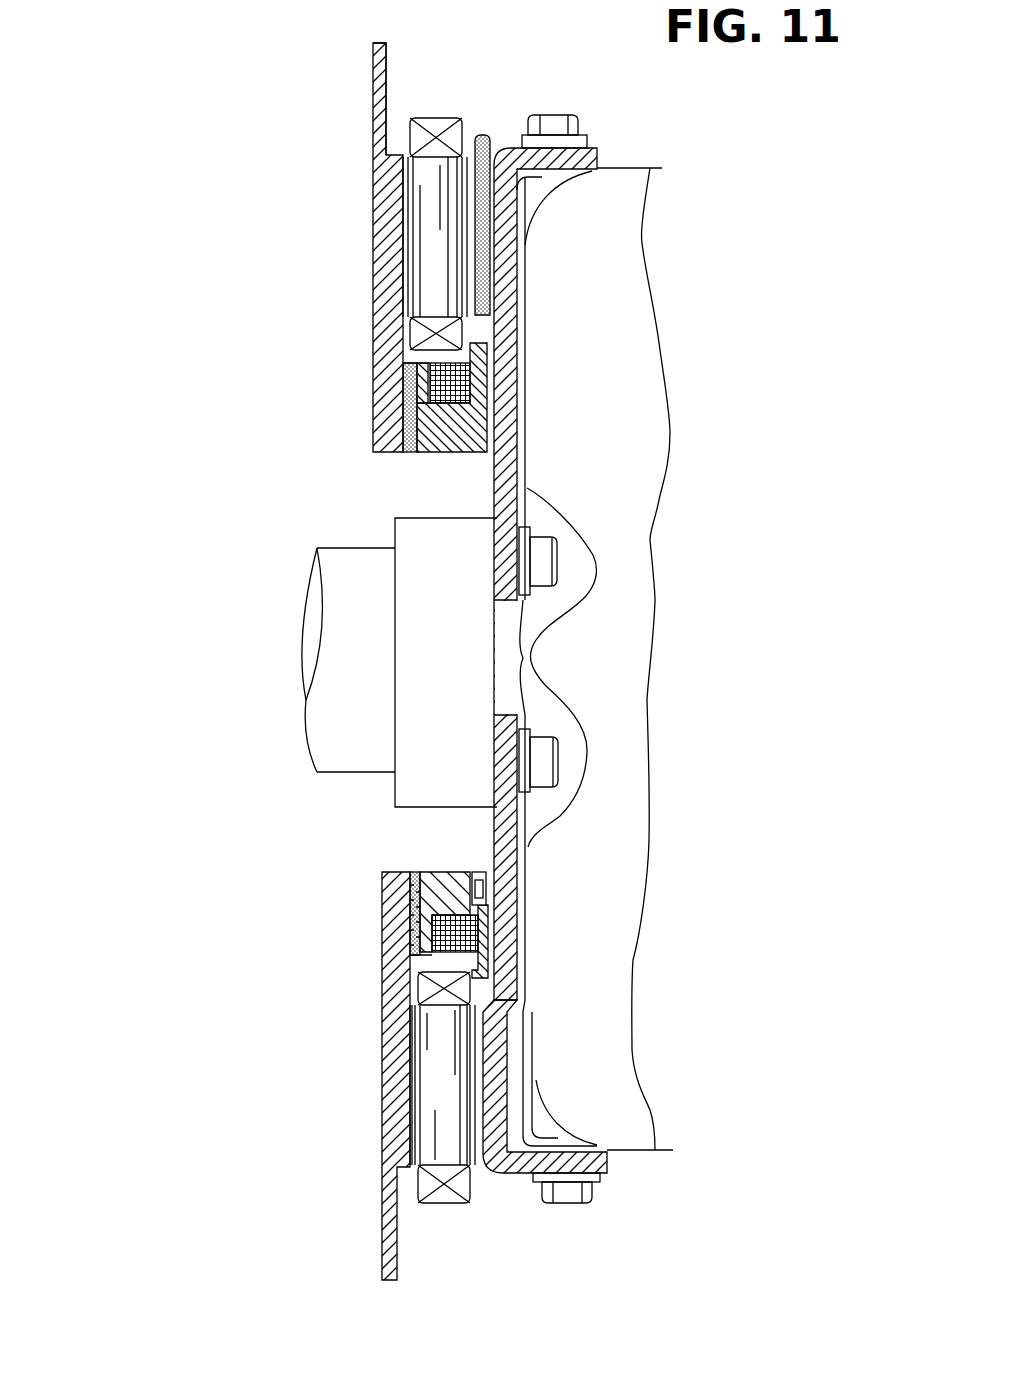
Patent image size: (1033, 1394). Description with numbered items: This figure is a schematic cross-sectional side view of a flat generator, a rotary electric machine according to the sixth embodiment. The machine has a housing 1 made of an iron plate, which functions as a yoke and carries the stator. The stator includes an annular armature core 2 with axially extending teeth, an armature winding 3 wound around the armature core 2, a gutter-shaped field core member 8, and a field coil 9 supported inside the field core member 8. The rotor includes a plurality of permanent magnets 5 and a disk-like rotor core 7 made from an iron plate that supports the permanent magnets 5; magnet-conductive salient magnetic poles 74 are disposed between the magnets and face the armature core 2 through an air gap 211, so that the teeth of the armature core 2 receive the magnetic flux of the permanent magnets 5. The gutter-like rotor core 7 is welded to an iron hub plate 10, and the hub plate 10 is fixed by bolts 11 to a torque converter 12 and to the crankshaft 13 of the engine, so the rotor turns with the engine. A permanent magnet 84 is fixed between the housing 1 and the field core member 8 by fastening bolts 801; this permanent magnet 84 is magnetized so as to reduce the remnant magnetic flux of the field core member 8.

The housing 1 is at (380, 147).
The annular armature core 2 is at (410, 202).
The armature winding 3 is at (395, 104).
The permanent magnets 5 is at (477, 233).
The rotor core 7 is at (517, 298).
The field core member 8 is at (450, 437).
The field coil 9 is at (407, 372).
The hub plate 10 is at (495, 478).
The bolts 11 is at (505, 535).
The torque converter 12 is at (565, 833).
The crankshaft 13 is at (410, 782).
The salient magnetic poles 74 is at (486, 1056).
The permanent magnet 84 is at (405, 420).
The air gap 211 is at (472, 263).
The fastening bolts 801 is at (476, 864).